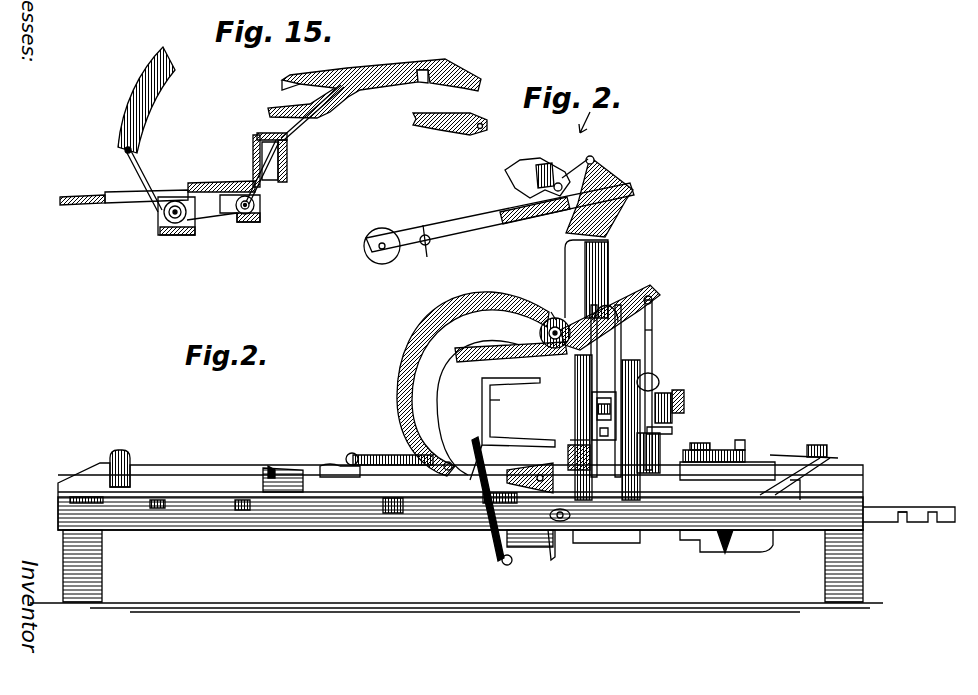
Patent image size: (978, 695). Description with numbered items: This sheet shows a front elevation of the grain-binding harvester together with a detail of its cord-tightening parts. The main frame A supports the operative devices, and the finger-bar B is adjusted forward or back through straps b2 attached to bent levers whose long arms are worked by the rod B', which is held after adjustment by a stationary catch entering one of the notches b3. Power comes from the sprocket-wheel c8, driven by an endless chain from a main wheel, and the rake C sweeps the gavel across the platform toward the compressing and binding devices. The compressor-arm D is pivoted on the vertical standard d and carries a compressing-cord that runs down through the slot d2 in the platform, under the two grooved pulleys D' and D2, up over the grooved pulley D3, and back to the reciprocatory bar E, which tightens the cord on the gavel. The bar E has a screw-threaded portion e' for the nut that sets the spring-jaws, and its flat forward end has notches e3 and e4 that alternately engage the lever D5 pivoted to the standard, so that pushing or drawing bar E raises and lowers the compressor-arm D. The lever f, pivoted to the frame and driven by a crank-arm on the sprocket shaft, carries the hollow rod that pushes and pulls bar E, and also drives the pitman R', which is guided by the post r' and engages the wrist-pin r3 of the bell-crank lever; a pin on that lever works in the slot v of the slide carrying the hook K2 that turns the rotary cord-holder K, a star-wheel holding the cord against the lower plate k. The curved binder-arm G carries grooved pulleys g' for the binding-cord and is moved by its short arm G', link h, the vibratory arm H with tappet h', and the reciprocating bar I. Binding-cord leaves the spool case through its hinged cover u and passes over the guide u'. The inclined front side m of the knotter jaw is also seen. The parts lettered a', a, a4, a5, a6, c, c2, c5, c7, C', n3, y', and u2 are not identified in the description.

In FIG. 15, the compressor-arm D is at (146, 100).
In FIG. 2, the compressor-arm D is at (458, 384).
In FIG. 15, the lever link a' is at (235, 148).
In FIG. 2, the lever link a' is at (573, 433).
In FIG. 15, the slot d2 is at (183, 192).
In FIG. 15, the grooved pulley D' is at (176, 226).
In FIG. 15, the grooved pulley D2 is at (253, 185).
In FIG. 2, the grooved pulley D2 is at (564, 332).
In FIG. 15, the grooved pulley D3 is at (288, 170).
In FIG. 15, the reciprocatory bar E is at (374, 81).
In FIG. 2, the reciprocatory bar E is at (626, 386).
In FIG. 15, the screw-threaded portion e' is at (287, 76).
In FIG. 15, the notch e4 is at (414, 86).
In FIG. 15, the notch e3 is at (450, 132).
In FIG. 2, the main frame A is at (62, 564).
In FIG. 2, the rod B' is at (909, 504).
In FIG. 2, the notches b3 is at (925, 526).
In FIG. 2, the finger-bar B is at (320, 509).
In FIG. 2, the straps b2 is at (168, 506).
In FIG. 2, the rake C is at (393, 447).
In FIG. 2, the rack roller C' is at (373, 448).
In FIG. 2, the rack part c7 is at (266, 460).
In FIG. 2, the sprocket-wheel c8 is at (296, 463).
In FIG. 2, the rack part c5 is at (320, 456).
In FIG. 2, the guide u' is at (499, 223).
In FIG. 2, the slot v is at (599, 196).
In FIG. 2, the hinged cover u is at (546, 175).
In FIG. 2, the vertical standard d is at (586, 280).
In FIG. 2, the pivot a4 is at (551, 311).
In FIG. 2, the brace a5 is at (622, 297).
In FIG. 2, the cross plate c is at (511, 352).
In FIG. 2, the inclined front side m is at (518, 412).
In FIG. 2, the bracket part c2 is at (485, 394).
In FIG. 2, the link y' is at (474, 443).
In FIG. 2, the panel a6 is at (575, 406).
In FIG. 2, the chain link a is at (594, 391).
In FIG. 2, the lever D5 is at (592, 418).
In FIG. 2, the block n3 is at (575, 457).
In FIG. 2, the short arm G' is at (666, 384).
In FIG. 2, the link h is at (660, 340).
In FIG. 2, the vibratory arm H is at (676, 392).
In FIG. 2, the reciprocating bar I is at (690, 398).
In FIG. 2, the tappet h' is at (669, 428).
In FIG. 2, the vertical post r' is at (701, 435).
In FIG. 2, the pitman R' is at (727, 448).
In FIG. 2, the wrist-pin r3 is at (804, 445).
In FIG. 2, the lever f is at (795, 462).
In FIG. 2, the rotary cord-holder K is at (545, 560).
In FIG. 2, the hook K2 is at (490, 538).
In FIG. 2, the lower plate k is at (504, 526).
In FIG. 2, the binder-arm G is at (505, 509).
In FIG. 2, the grooved pulleys g' is at (514, 569).
In FIG. 2, the lower u part u2 is at (796, 490).